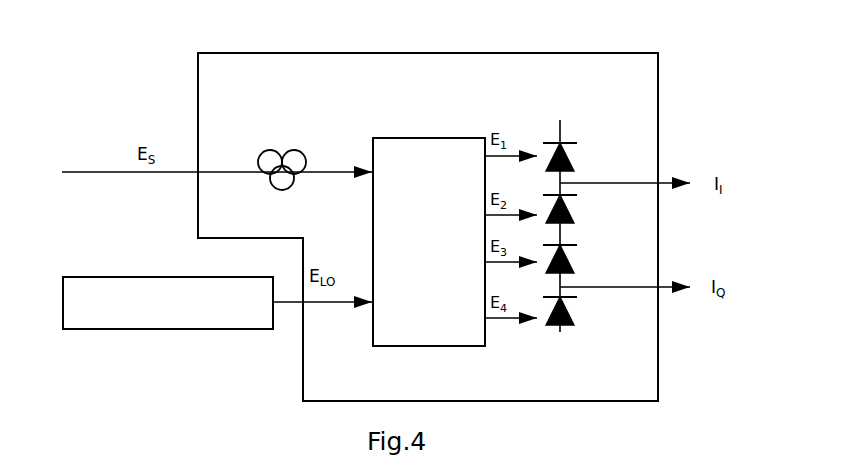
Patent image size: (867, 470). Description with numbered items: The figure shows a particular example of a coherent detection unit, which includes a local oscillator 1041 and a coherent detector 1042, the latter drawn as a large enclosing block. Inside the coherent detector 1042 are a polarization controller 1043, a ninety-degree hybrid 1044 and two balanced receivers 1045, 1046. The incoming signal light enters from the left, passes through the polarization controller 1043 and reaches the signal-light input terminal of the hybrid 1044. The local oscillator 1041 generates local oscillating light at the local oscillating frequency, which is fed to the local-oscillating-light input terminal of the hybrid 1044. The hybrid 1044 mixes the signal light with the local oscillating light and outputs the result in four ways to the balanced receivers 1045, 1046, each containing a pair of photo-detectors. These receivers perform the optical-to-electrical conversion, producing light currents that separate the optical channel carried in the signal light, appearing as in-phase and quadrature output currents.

The local oscillator 1041 is at (168, 289).
The coherent detector 1042 is at (428, 215).
The polarization controller 1043 is at (283, 156).
The hybrid 1044 is at (429, 229).
The balanced receiver 1045 is at (581, 154).
The balanced receiver 1046 is at (585, 302).